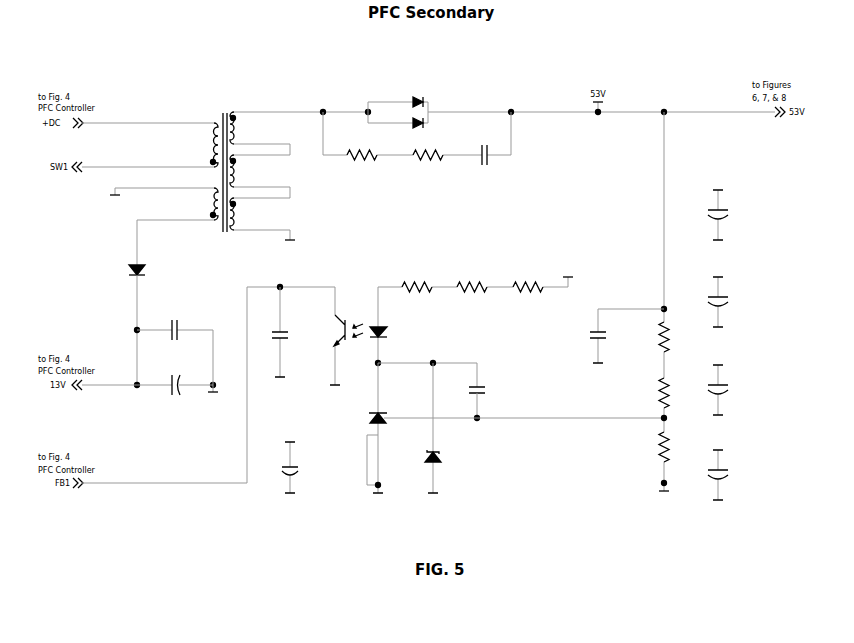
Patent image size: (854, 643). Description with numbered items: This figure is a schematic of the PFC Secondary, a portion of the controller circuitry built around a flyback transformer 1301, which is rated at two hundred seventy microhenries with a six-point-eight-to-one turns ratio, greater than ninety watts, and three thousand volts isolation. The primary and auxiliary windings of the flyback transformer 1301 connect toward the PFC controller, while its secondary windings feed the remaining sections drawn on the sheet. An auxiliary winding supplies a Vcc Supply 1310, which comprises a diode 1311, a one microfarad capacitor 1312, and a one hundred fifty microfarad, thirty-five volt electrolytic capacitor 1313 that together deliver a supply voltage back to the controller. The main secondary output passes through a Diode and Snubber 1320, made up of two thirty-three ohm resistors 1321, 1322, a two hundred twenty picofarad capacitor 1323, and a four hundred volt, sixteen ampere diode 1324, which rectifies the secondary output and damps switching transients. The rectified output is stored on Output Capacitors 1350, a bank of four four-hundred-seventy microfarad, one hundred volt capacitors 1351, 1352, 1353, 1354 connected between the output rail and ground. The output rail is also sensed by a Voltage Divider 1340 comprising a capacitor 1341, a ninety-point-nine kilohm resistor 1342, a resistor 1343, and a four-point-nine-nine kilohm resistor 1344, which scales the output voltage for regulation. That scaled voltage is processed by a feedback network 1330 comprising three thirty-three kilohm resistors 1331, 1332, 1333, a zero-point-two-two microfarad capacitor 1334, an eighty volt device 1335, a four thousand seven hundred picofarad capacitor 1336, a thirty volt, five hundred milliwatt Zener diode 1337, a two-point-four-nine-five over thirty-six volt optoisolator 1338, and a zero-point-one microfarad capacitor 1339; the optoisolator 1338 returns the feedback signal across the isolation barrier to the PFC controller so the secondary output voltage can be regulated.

The flyback transformer 1301 is at (225, 167).
The Vcc supply 1310 is at (135, 334).
The diode 1311 is at (158, 325).
The capacitor 1312 is at (175, 342).
The electrolytic capacitor 1313 is at (147, 374).
The diode and snubber 1320 is at (417, 143).
The resistor 1321 is at (362, 147).
The resistor 1322 is at (428, 147).
The capacitor 1323 is at (482, 145).
The diode 1324 is at (406, 105).
The feedback network 1330 is at (373, 369).
The resistor 1331 is at (417, 279).
The resistor 1332 is at (472, 279).
The resistor 1333 is at (528, 279).
The capacitor 1334 is at (296, 338).
The 80V device 1335 is at (400, 325).
The capacitor 1336 is at (496, 402).
The Zener diode 1337 is at (449, 434).
The optoisolator 1338 is at (500, 434).
The capacitor 1339 is at (306, 467).
The voltage divider 1340 is at (612, 308).
The capacitor 1341 is at (609, 342).
The resistor 1342 is at (650, 337).
The resistor 1343 is at (650, 393).
The resistor 1344 is at (650, 447).
The output capacitors 1350 is at (736, 324).
The capacitor 1351 is at (738, 212).
The capacitor 1352 is at (738, 299).
The capacitor 1353 is at (738, 387).
The capacitor 1354 is at (738, 474).